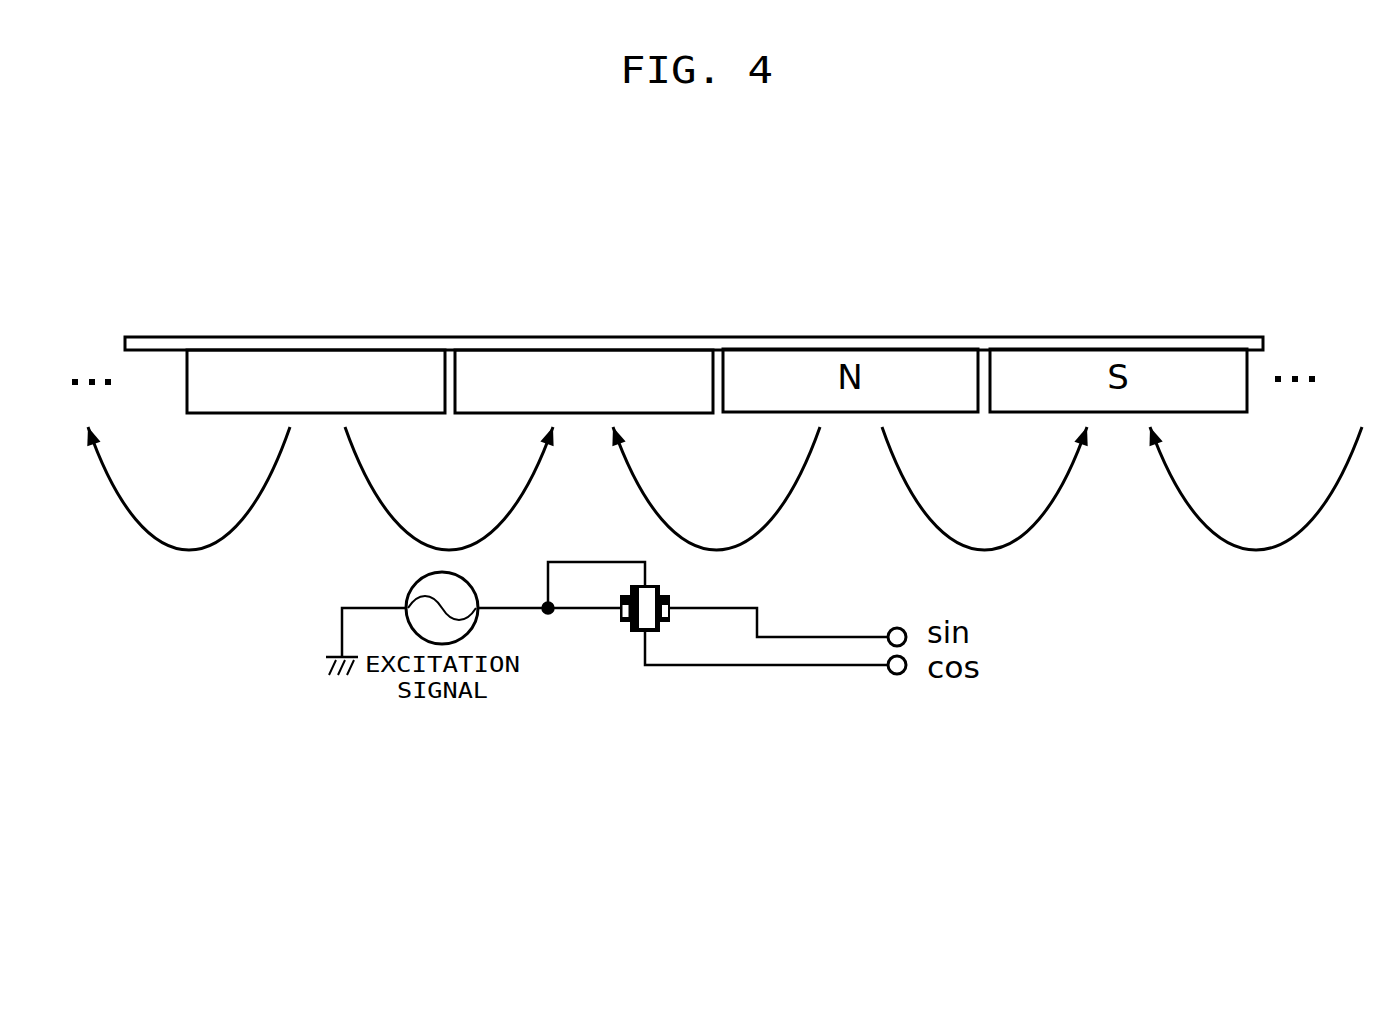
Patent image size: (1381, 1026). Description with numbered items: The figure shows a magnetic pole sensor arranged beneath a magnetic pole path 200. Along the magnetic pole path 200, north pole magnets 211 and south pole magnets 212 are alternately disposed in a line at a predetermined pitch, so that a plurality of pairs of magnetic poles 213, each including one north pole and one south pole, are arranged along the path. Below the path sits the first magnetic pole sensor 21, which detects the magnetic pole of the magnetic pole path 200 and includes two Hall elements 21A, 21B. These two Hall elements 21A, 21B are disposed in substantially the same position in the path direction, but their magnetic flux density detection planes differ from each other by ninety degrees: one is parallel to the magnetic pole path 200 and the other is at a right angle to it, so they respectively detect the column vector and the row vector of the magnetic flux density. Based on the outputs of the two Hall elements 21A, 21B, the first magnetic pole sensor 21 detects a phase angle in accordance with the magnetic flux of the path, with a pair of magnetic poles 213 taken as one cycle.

The magnetic pole path 200 is at (1215, 335).
The north pole magnet 211 is at (322, 350).
The south pole magnet 212 is at (584, 333).
The pair of magnetic poles 213 is at (450, 299).
The first magnetic pole sensor 21 is at (544, 723).
The Hall element 21A is at (620, 612).
The Hall element 21B is at (637, 632).